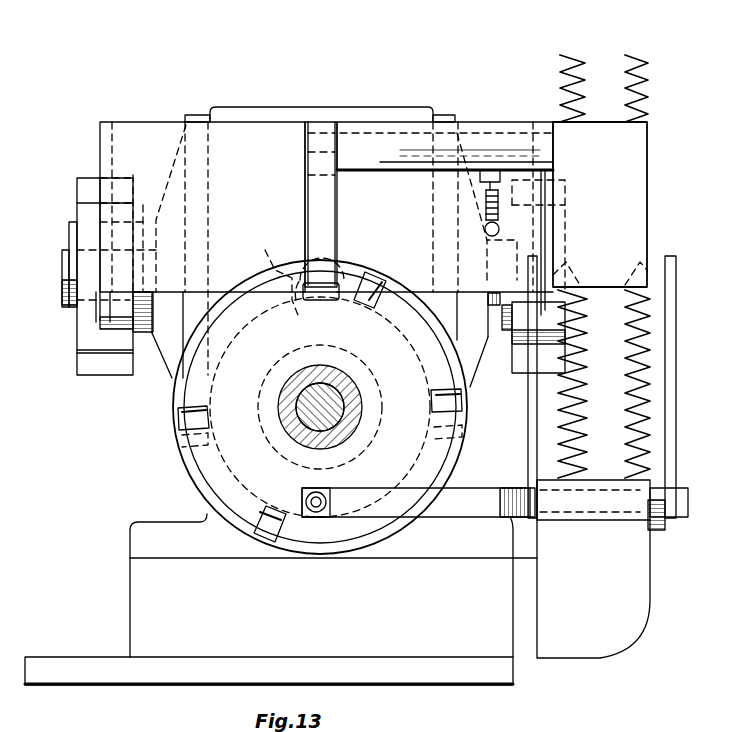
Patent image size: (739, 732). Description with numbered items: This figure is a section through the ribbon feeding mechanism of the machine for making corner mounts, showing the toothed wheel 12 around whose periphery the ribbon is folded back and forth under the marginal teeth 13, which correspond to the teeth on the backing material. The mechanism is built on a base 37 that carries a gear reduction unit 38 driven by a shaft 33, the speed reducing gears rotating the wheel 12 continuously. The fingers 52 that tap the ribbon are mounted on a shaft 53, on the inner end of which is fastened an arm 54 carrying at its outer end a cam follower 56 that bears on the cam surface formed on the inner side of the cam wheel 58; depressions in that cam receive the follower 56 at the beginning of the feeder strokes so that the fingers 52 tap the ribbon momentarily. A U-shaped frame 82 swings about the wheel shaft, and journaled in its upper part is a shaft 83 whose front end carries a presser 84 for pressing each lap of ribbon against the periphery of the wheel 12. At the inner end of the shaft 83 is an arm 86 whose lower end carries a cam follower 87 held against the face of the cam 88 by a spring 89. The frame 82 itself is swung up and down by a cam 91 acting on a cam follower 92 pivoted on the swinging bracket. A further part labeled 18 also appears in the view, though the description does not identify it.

The wheel 12 is at (598, 62).
The marginal teeth 13 is at (640, 76).
The base frame 18 is at (101, 728).
The shaft 33 is at (305, 400).
The base 37 is at (70, 662).
The gear reduction unit 38 is at (205, 522).
The fingers 52 is at (528, 446).
The shaft 53 is at (688, 522).
The arm 54 is at (476, 514).
The cam follower 56 is at (328, 492).
The cam wheel 58 is at (352, 388).
The U-shaped frame 82 is at (143, 128).
The shaft 83 is at (468, 142).
The presser 84 is at (600, 204).
The arm 86 is at (305, 187).
The cam follower 87 is at (322, 301).
The cam 88 is at (390, 292).
The spring 89 is at (486, 207).
The cam 91 is at (262, 292).
The cam follower 92 is at (306, 262).